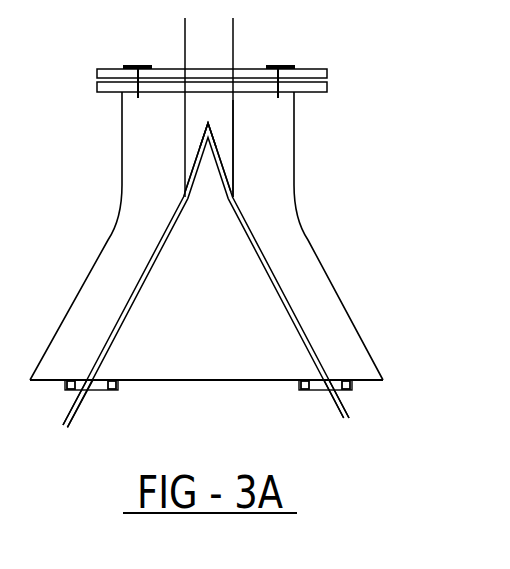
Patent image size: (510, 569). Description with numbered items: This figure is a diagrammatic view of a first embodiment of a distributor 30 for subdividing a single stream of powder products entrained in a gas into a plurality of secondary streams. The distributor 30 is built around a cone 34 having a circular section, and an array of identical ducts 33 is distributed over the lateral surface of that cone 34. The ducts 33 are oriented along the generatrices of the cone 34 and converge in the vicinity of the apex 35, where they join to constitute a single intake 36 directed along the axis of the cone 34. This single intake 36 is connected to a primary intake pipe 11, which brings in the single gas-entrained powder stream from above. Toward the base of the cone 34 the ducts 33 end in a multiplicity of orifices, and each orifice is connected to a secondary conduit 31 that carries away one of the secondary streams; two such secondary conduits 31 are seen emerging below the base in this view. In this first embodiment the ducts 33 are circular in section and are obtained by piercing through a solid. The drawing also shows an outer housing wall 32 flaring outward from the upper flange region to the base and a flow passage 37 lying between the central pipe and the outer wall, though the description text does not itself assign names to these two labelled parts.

The primary intake pipe 11 is at (222, 52).
The distributor 30 is at (376, 179).
The secondary conduit 31 is at (78, 410).
The housing outer wall 32 is at (98, 277).
The duct 33 is at (272, 292).
The cone 34 is at (218, 248).
The apex 35 is at (210, 116).
The single intake 36 is at (200, 108).
The flow channel 37 is at (240, 182).